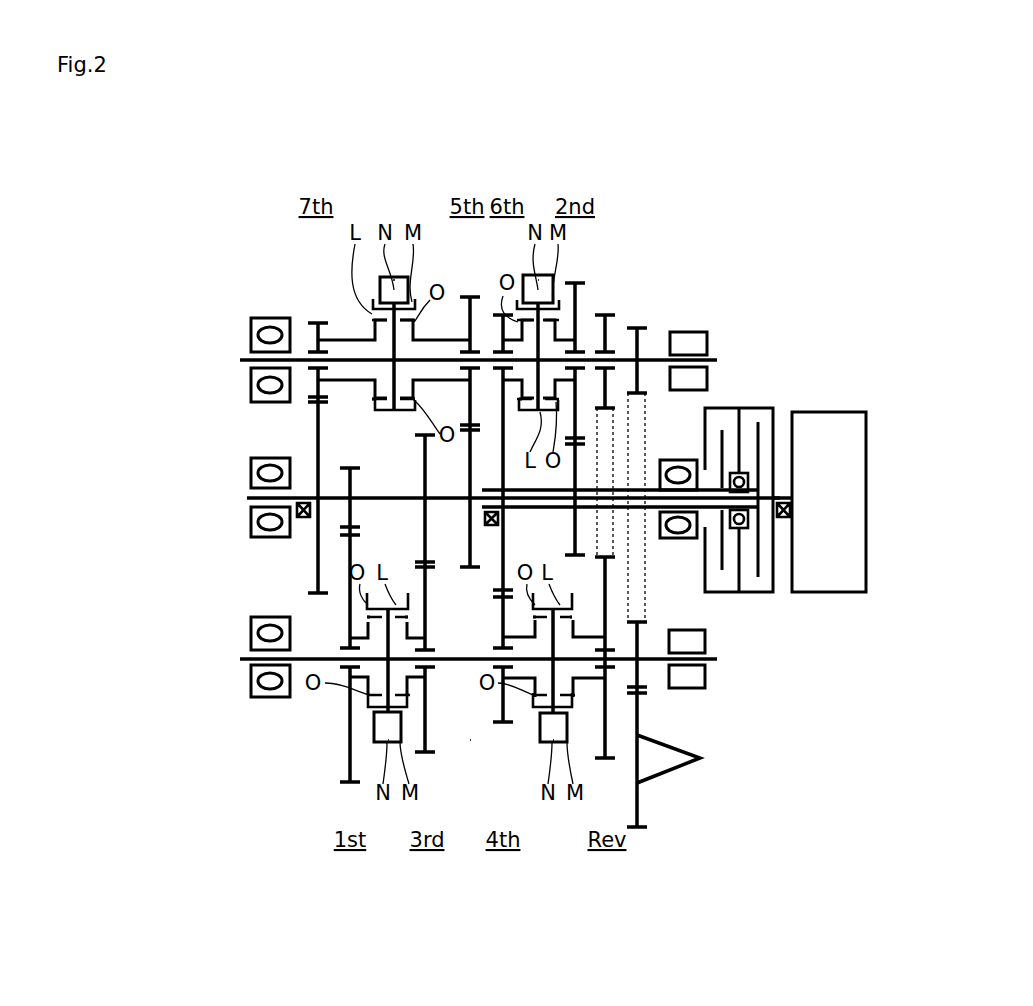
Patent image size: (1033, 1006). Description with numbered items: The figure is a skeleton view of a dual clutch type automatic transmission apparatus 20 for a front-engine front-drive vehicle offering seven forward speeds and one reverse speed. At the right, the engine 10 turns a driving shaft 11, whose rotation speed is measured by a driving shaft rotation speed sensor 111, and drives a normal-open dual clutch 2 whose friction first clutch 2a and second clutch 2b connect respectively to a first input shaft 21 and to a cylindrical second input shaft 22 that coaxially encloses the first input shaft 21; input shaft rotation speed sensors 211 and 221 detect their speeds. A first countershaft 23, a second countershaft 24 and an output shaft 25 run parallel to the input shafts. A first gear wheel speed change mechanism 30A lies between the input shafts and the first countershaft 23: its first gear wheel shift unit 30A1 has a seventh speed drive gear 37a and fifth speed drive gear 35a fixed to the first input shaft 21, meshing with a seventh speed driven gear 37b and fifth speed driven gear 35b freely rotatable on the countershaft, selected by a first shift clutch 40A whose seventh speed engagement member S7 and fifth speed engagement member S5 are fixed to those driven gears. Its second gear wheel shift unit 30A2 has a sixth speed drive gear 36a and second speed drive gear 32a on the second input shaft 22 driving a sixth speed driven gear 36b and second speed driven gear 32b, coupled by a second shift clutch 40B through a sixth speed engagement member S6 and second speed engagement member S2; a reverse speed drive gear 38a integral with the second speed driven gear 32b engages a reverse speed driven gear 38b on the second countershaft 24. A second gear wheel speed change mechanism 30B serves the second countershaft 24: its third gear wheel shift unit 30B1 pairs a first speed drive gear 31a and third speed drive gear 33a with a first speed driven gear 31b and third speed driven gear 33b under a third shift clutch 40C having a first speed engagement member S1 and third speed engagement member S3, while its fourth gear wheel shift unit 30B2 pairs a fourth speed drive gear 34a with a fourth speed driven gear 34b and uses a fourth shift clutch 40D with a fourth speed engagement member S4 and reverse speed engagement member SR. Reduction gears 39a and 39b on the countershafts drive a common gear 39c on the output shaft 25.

The dual clutch 2 is at (801, 324).
The first clutch 2a is at (758, 425).
The second clutch 2b is at (722, 435).
The engine 10 is at (846, 411).
The driving shaft 11 is at (785, 502).
The driving shaft rotation speed sensor 111 is at (785, 519).
The automatic transmission apparatus 20 is at (678, 130).
The first input shaft 21 is at (247, 497).
The input shaft rotation speed sensor 211 is at (312, 506).
The second input shaft 22 is at (650, 512).
The input shaft rotation speed sensor 221 is at (486, 516).
The first countershaft 23 is at (246, 359).
The second countershaft 24 is at (246, 658).
The output shaft 25 is at (701, 759).
The first gear wheel speed change mechanism 30A is at (460, 126).
The first gear wheel shift unit 30A1 is at (402, 186).
The second gear wheel shift unit 30A2 is at (544, 186).
The second gear wheel speed change mechanism 30B is at (461, 896).
The third gear wheel shift unit 30B1 is at (396, 852).
The fourth gear wheel shift unit 30B2 is at (553, 852).
The first speed drive gear 31a is at (349, 487).
The first speed driven gear 31b is at (348, 783).
The second speed drive gear 32a is at (573, 530).
The second speed driven gear 32b is at (577, 302).
The third speed drive gear 33a is at (467, 482).
The third speed driven gear 33b is at (426, 753).
The fourth speed drive gear 34a is at (503, 556).
The fourth speed driven gear 34b is at (503, 723).
The fifth speed drive gear 35a is at (427, 485).
The fifth speed driven gear 35b is at (470, 296).
The sixth speed drive gear 36a is at (513, 433).
The sixth speed driven gear 36b is at (500, 330).
The seventh speed drive gear 37a is at (317, 438).
The seventh speed driven gear 37b is at (316, 324).
The reverse speed drive gear 38a is at (607, 318).
The reverse speed driven gear 38b is at (605, 759).
The first reduction gear train gear 39a is at (638, 329).
The second reduction gear train gear 39b is at (640, 690).
The reduction gear train output gear 39c is at (640, 795).
The first shift clutch 40A is at (373, 323).
The second shift clutch 40B is at (578, 314).
The third shift clutch 40C is at (368, 703).
The fourth shift clutch 40D is at (549, 703).
The first speed engagement member S1 is at (362, 628).
The second speed engagement member S2 is at (611, 482).
The third speed engagement member S3 is at (410, 628).
The fourth speed engagement member S4 is at (530, 627).
The fifth speed engagement member S5 is at (413, 389).
The sixth speed engagement member S6 is at (521, 383).
The seventh speed engagement member S7 is at (374, 389).
The reverse speed engagement member SR is at (576, 615).